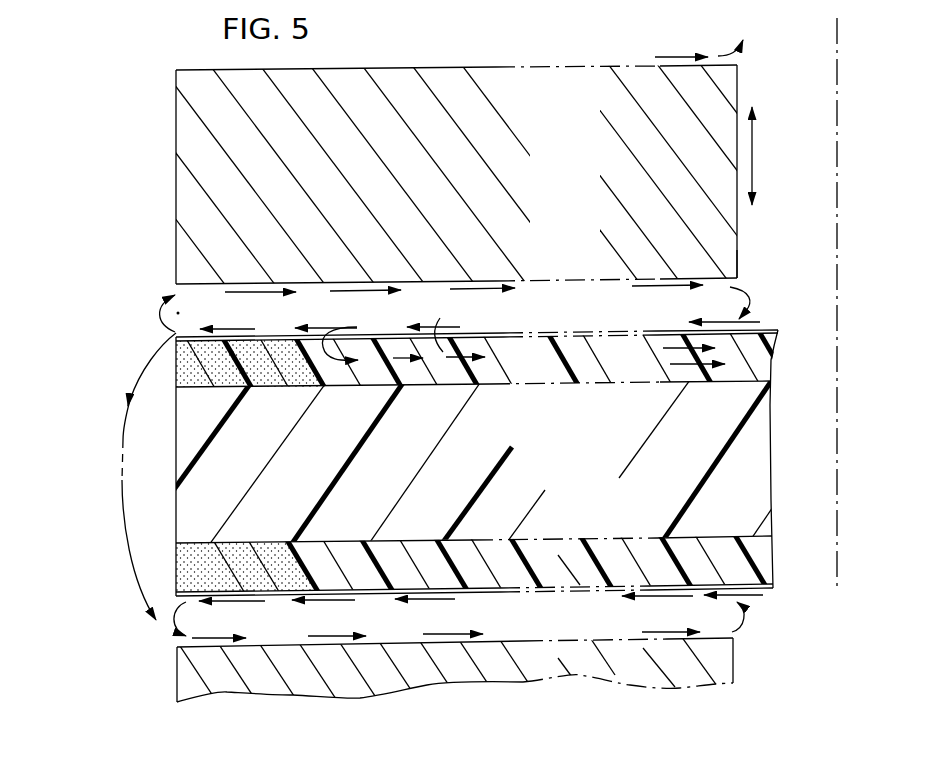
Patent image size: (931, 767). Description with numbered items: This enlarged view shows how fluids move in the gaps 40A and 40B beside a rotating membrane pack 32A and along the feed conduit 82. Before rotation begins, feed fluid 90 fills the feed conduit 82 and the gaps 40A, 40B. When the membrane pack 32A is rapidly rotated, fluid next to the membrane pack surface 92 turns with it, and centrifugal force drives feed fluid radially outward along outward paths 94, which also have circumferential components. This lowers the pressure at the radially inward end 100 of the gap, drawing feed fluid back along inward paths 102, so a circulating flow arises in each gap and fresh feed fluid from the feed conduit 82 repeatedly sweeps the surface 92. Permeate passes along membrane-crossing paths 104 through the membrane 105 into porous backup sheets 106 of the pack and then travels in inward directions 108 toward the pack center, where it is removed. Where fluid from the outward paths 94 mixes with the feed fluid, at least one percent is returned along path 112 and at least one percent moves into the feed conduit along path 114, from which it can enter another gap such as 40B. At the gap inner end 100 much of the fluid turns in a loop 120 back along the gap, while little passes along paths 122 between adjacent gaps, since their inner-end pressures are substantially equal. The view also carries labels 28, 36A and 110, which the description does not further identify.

The centerline axis 28 is at (837, 52).
The upper wall / first heat exchange member 36A is at (170, 144).
The membrane pack 32A is at (170, 441).
The feed conduit 82 is at (88, 239).
The feed fluid 90 is at (143, 239).
The return path 112 is at (163, 304).
The flow junction 110 is at (177, 313).
The path into feed conduit 114 is at (141, 369).
The inward paths 102 is at (247, 293).
The outward path 94 is at (423, 327).
The membrane-crossing paths 104 is at (439, 327).
The membrane pack surface 92 is at (492, 332).
The gap 40A is at (620, 314).
The inward directions 108 is at (673, 348).
The radially inward end of gap 100 is at (730, 287).
The membrane 105 is at (810, 312).
The porous backup sheets 106 is at (765, 360).
The loop 120 is at (729, 303).
The paths between adjacent gaps 122 is at (753, 142).
The gap 40B is at (592, 626).